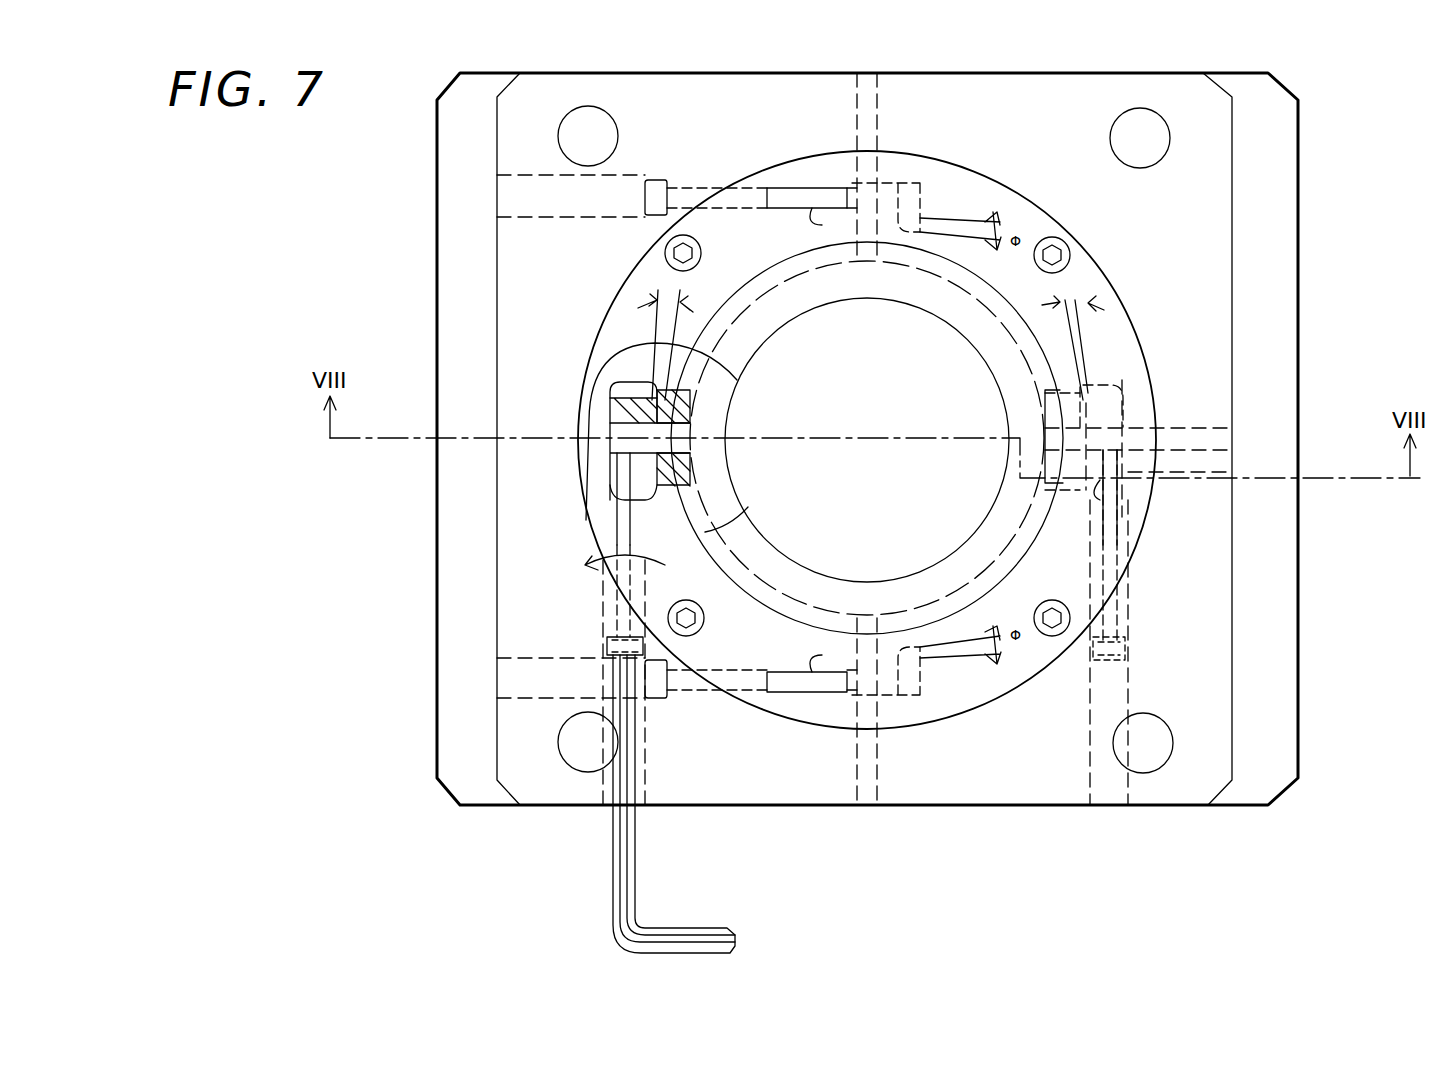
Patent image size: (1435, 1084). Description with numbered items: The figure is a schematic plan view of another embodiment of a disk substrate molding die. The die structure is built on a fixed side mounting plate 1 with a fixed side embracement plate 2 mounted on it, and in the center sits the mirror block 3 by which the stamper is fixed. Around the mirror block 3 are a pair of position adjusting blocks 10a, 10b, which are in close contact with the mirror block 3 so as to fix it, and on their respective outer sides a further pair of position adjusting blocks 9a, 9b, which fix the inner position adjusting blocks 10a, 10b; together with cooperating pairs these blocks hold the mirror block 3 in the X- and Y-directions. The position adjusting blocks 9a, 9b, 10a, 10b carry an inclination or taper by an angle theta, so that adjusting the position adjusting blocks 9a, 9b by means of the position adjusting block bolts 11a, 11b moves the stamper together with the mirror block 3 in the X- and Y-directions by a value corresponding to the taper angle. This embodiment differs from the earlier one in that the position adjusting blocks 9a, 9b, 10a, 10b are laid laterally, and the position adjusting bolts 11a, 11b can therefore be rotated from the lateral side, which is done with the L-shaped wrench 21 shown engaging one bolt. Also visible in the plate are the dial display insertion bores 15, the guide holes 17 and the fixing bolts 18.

The fixed side mounting plate 1 is at (1262, 757).
The fixed side embracement plate 2 is at (1035, 767).
The mirror block 3 is at (990, 312).
The position adjusting block 9a is at (1123, 413).
The position adjusting block 9b is at (612, 410).
The position adjusting block 10a is at (1080, 403).
The position adjusting block 10b is at (612, 520).
The position adjusting block bolt 11a is at (1128, 648).
The position adjusting block bolt 11b is at (605, 630).
The dial display insertion bore 15 is at (868, 122).
The guide hole 17 is at (575, 134).
The fixing bolt 18 is at (1068, 258).
The L-shaped wrench 21 is at (703, 928).